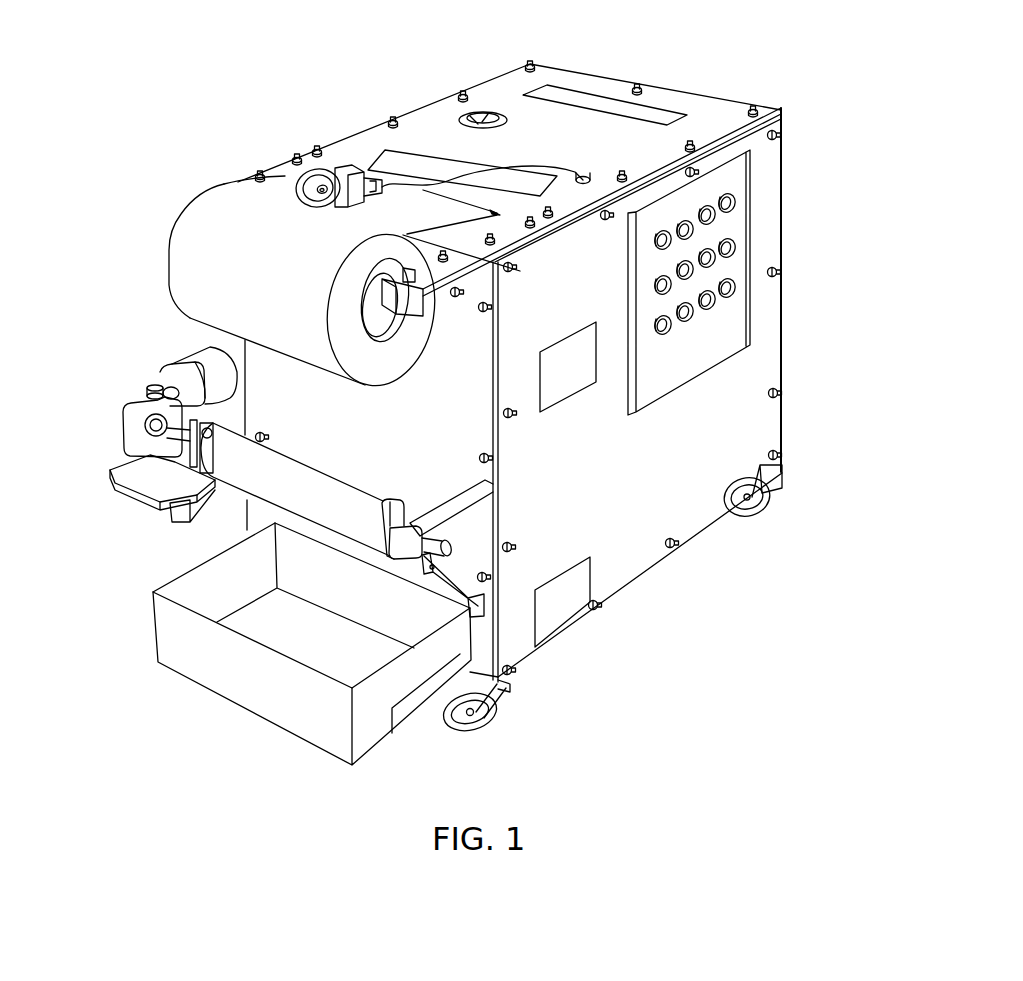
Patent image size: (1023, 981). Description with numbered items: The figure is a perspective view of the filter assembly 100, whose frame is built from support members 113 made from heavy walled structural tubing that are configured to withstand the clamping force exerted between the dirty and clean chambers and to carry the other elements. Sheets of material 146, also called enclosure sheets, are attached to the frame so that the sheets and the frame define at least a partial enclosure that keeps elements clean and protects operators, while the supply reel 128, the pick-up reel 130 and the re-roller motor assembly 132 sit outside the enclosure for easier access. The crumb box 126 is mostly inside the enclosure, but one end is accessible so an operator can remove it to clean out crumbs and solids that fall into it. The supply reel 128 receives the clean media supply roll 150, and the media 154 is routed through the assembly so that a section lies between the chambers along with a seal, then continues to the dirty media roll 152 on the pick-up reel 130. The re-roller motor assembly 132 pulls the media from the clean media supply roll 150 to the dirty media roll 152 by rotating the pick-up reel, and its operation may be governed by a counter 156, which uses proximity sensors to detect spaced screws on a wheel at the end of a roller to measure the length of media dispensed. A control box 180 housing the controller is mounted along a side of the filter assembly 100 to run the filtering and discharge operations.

The filter assembly 100 is at (500, 424).
The support members 113 is at (455, 292).
The crumb box 126 is at (305, 715).
The supply reel 128 is at (372, 313).
The pick-up reel 130 is at (207, 448).
The re-roller motor assembly 132 is at (183, 360).
The sheets of material 146 is at (765, 200).
The clean media supply roll 150 is at (188, 268).
The dirty media roll 152 is at (247, 467).
The media 154 is at (419, 205).
The counter 156 is at (313, 188).
The control box 180 is at (730, 266).